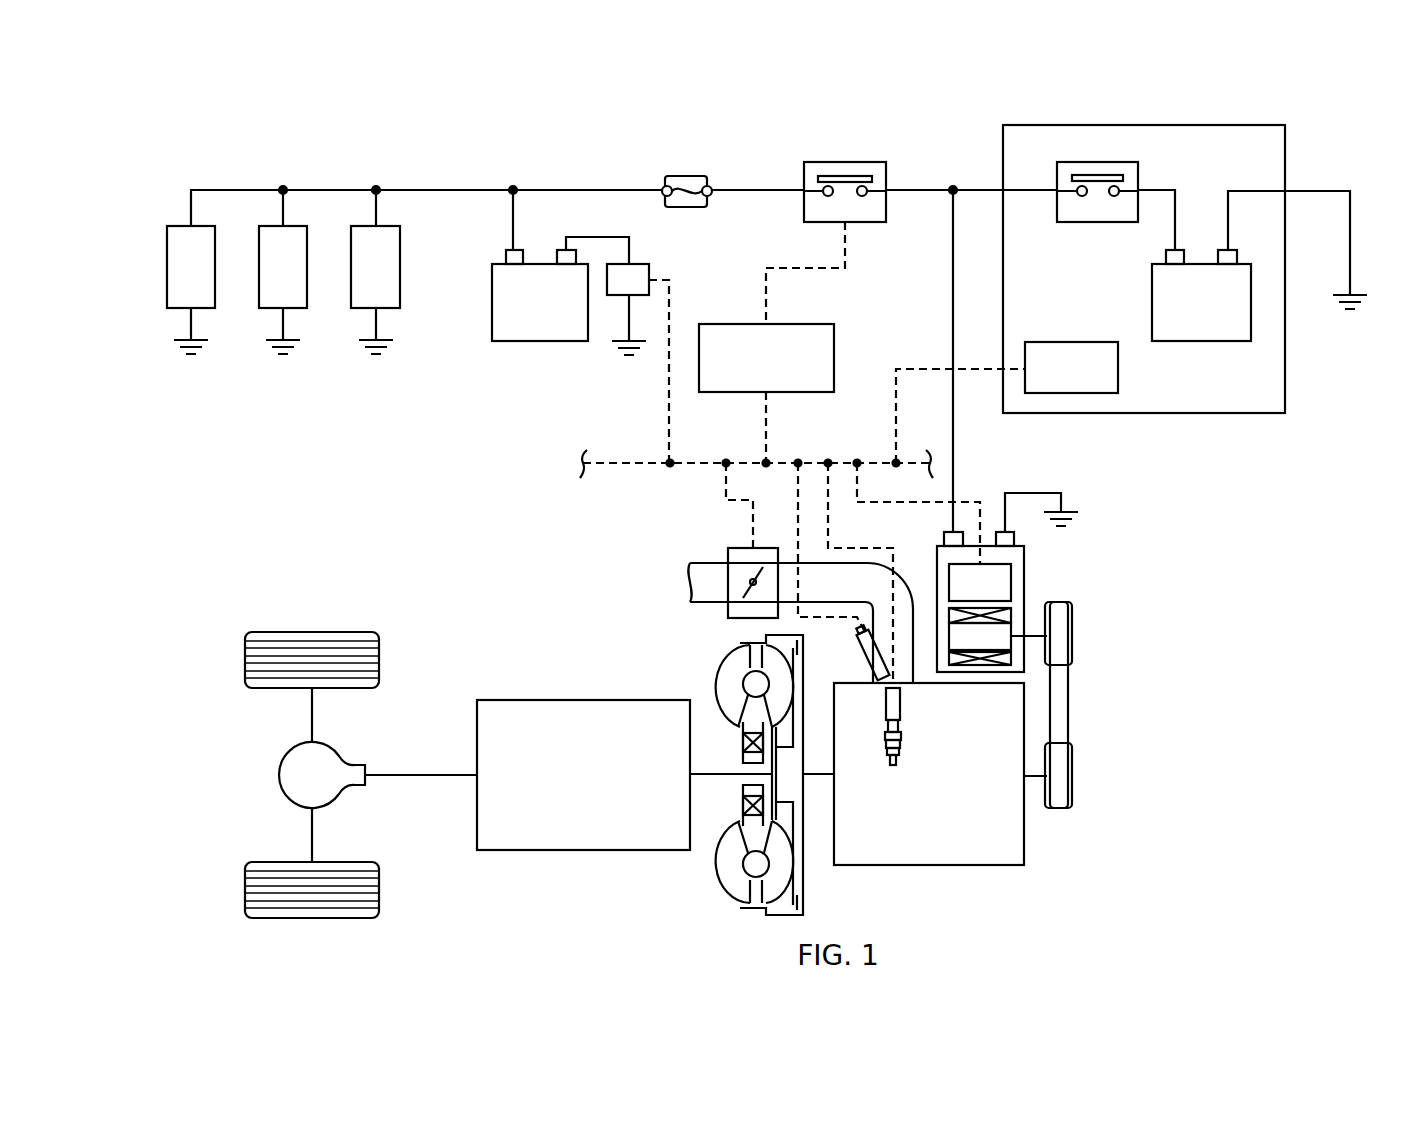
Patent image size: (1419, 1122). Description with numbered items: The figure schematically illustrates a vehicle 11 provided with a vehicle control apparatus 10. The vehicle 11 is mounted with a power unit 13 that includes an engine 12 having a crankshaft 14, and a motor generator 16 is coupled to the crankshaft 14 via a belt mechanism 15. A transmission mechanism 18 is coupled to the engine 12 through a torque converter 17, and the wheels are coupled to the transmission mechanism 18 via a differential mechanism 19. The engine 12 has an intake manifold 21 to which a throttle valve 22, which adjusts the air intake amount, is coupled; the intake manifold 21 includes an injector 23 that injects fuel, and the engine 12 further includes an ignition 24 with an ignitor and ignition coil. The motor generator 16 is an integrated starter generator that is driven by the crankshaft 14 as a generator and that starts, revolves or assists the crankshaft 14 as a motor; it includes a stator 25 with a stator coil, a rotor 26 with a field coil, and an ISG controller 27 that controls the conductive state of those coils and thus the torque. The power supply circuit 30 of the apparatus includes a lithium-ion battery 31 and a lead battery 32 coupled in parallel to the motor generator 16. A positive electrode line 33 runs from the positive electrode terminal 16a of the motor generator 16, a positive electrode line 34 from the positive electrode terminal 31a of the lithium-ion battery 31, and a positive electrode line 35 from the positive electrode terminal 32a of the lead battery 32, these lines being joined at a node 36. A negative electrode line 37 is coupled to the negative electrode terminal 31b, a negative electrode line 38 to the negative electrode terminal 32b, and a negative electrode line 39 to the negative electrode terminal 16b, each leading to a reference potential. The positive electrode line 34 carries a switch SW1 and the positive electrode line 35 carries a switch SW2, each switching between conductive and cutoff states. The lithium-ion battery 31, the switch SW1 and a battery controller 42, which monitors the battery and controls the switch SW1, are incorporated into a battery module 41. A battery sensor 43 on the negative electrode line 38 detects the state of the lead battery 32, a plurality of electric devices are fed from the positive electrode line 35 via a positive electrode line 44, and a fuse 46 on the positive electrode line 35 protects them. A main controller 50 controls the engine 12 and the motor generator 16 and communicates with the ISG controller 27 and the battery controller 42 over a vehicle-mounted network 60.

The vehicle control apparatus 10 is at (214, 118).
The vehicle 11 is at (197, 580).
The engine 12 is at (1024, 827).
The power unit 13 is at (1060, 872).
The crankshaft 14 is at (834, 770).
The belt mechanism 15 is at (1072, 708).
The motor generator 16 is at (1108, 562).
The positive electrode terminal 16a is at (944, 540).
The negative electrode terminal 16b is at (1014, 540).
The torque converter 17 is at (722, 883).
The transmission mechanism 18 is at (582, 700).
The differential mechanism 19 is at (278, 775).
The intake manifold 21 is at (905, 598).
The throttle valve 22 is at (728, 556).
The injector 23 is at (862, 657).
The ignition 24 is at (900, 706).
The stator 25 is at (975, 673).
The rotor 26 is at (1005, 636).
The ISG controller 27 is at (1012, 585).
The power supply circuit 30 is at (1340, 157).
The lithium-ion battery 31 is at (1195, 342).
The positive electrode terminal 31a is at (1176, 265).
The negative electrode terminal 31b is at (1238, 256).
The lead battery 32 is at (492, 305).
The positive electrode terminal 32a is at (505, 257).
The negative electrode terminal 32b is at (566, 266).
The positive electrode line 33 is at (954, 465).
The positive electrode line 34 is at (1028, 188).
The positive electrode line 35 is at (518, 221).
The node 36 is at (953, 186).
The negative electrode line 37 is at (1355, 270).
The negative electrode line 38 is at (630, 243).
The negative electrode line 39 is at (1063, 499).
The battery module 41 is at (1093, 125).
The battery controller 42 is at (1087, 342).
The battery sensor 43 is at (650, 273).
The positive electrode line 44 is at (338, 190).
The fuse 46 is at (688, 175).
The main controller 50 is at (834, 335).
The vehicle-mounted network 60 is at (640, 462).
The switch SW1 is at (1092, 222).
The switch SW2 is at (848, 162).